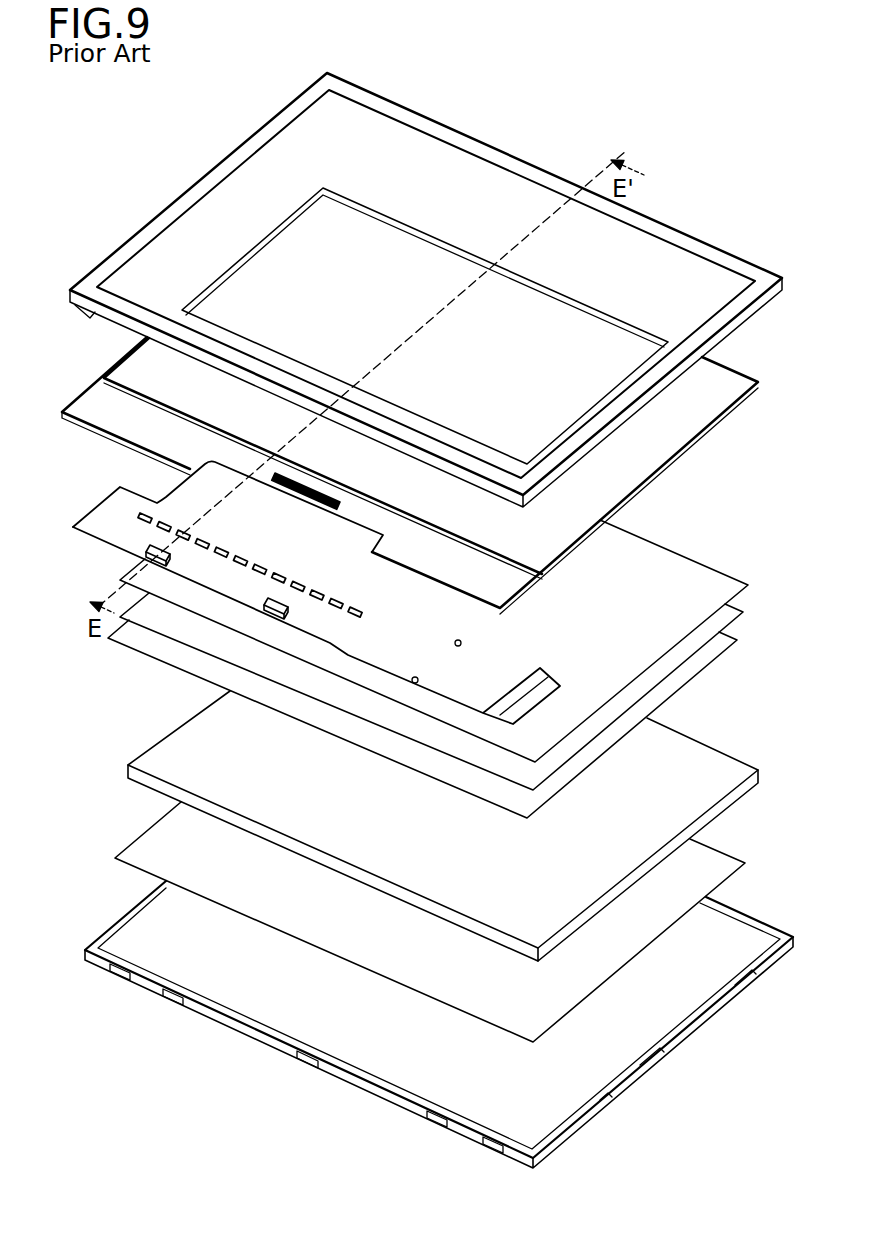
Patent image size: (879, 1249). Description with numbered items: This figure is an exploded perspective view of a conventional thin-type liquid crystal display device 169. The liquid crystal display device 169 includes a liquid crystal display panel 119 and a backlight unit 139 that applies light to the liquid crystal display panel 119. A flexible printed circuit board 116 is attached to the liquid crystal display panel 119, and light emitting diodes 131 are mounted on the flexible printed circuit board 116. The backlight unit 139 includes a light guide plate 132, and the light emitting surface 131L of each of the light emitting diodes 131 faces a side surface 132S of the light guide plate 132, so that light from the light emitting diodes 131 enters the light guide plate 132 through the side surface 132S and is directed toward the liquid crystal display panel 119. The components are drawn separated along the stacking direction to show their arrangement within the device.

The liquid crystal display device 169 is at (114, 166).
The liquid crystal display panel 119 is at (770, 338).
The light emitting diodes 131 is at (268, 606).
The light emitting surface 131L is at (150, 556).
The flexible printed circuit board 116 is at (434, 641).
The backlight unit 139 is at (90, 543).
The light guide plate 132 is at (443, 826).
The side surface of light guide plate 132S is at (147, 739).